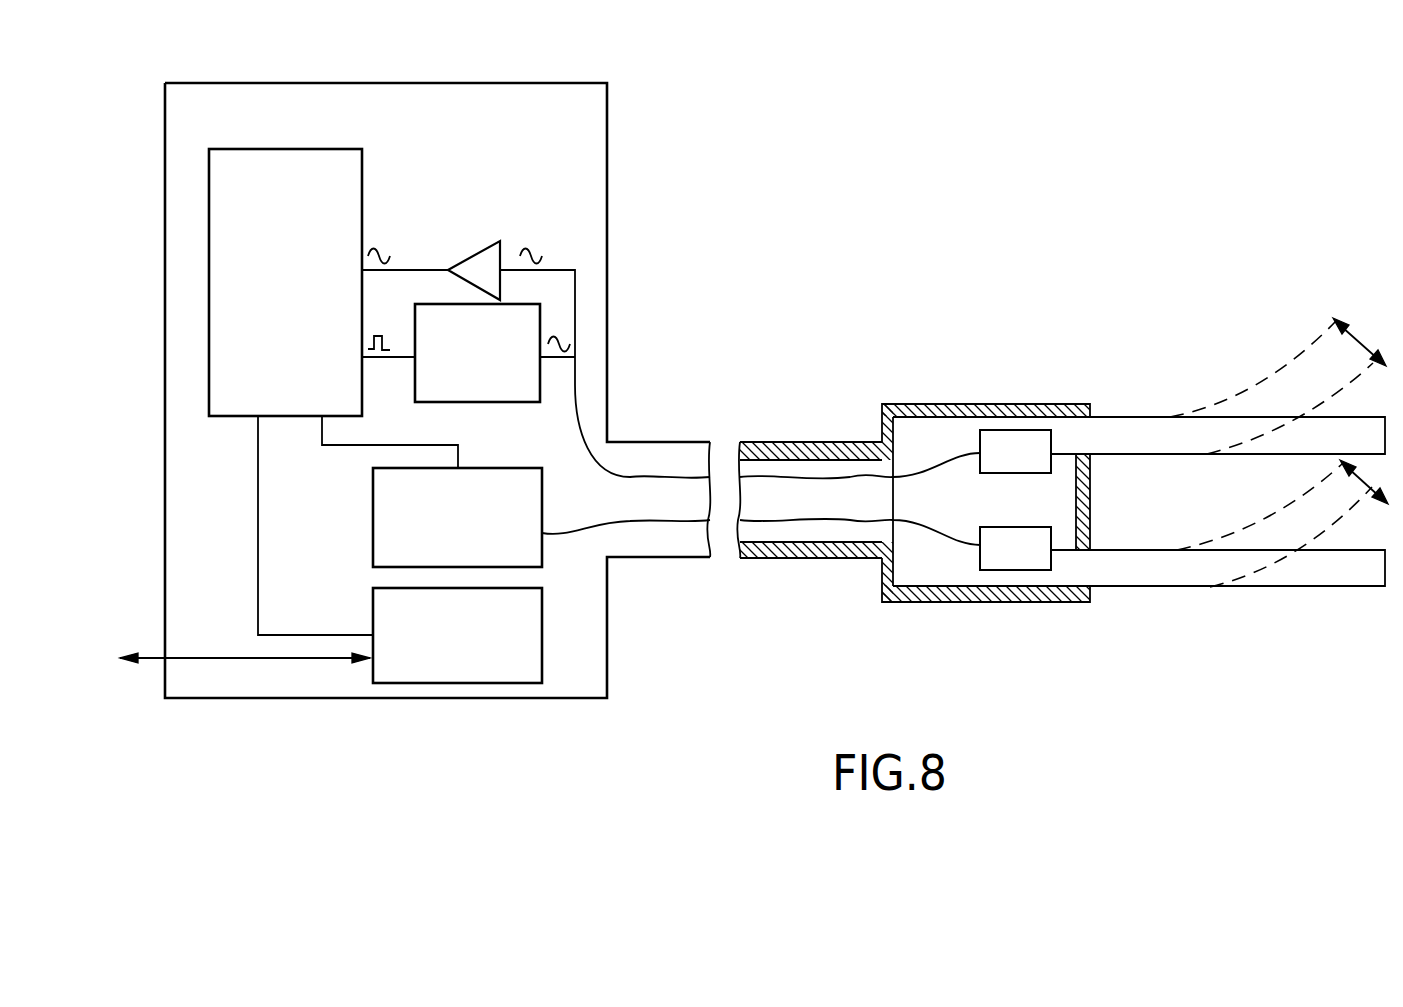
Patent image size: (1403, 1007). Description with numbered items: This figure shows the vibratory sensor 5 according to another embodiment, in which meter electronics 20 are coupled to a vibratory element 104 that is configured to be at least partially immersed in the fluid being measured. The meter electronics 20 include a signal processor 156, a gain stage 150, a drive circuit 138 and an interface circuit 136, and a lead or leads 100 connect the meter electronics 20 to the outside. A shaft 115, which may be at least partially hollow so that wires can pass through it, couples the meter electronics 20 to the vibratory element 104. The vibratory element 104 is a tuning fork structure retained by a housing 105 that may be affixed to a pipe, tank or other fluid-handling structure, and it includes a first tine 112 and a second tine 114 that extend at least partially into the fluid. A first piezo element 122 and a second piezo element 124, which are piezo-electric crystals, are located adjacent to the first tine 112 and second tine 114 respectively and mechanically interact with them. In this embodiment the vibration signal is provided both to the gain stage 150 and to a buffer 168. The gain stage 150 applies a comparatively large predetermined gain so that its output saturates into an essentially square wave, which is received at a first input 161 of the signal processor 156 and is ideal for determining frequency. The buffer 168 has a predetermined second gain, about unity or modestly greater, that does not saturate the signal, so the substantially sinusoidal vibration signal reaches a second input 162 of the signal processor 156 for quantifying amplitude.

The vibratory sensor 5 is at (778, 232).
The meter electronics 20 is at (517, 122).
The leads 100 is at (148, 662).
The vibratory element 104 is at (1238, 652).
The housing 105 is at (933, 404).
The first tine 112 is at (1135, 587).
The second tine 114 is at (1128, 417).
The shaft 115 is at (655, 440).
The first piezo element 122 is at (1008, 570).
The second piezo element 124 is at (1005, 430).
The interface circuit 136 is at (472, 673).
The drive circuit 138 is at (472, 553).
The gain stage 150 is at (497, 391).
The signal processor 156 is at (305, 236).
The first input 161 is at (447, 353).
The second input 162 is at (447, 317).
The buffer 168 is at (480, 248).